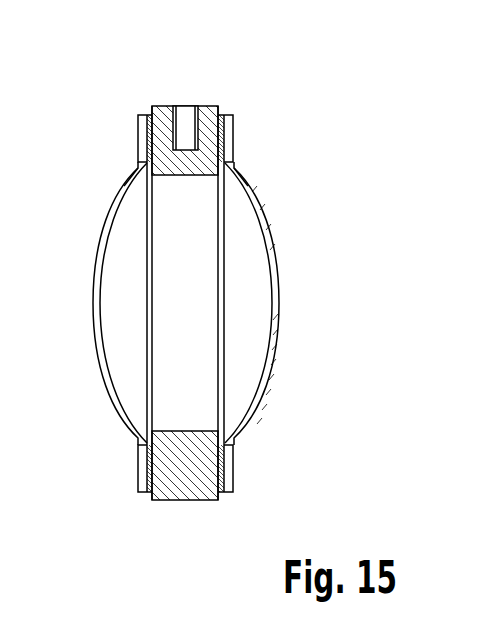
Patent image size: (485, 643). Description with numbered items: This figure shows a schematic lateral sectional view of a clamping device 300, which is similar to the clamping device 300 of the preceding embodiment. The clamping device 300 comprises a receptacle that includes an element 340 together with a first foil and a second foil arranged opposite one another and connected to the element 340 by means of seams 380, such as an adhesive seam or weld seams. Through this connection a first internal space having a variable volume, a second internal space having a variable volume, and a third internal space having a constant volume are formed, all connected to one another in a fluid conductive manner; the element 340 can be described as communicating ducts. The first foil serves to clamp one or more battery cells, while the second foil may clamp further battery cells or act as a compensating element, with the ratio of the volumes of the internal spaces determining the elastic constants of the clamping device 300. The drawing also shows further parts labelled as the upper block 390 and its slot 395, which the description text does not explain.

The clamping device 300 is at (207, 28).
The element 340 is at (187, 500).
The seams 380 is at (148, 115).
The top end block 390 is at (165, 106).
The slot 395 is at (183, 106).